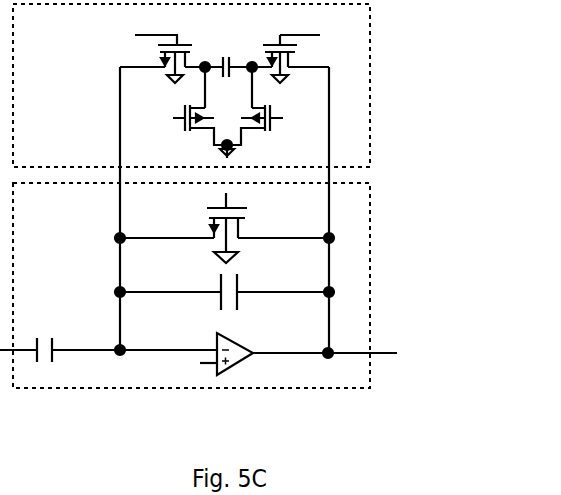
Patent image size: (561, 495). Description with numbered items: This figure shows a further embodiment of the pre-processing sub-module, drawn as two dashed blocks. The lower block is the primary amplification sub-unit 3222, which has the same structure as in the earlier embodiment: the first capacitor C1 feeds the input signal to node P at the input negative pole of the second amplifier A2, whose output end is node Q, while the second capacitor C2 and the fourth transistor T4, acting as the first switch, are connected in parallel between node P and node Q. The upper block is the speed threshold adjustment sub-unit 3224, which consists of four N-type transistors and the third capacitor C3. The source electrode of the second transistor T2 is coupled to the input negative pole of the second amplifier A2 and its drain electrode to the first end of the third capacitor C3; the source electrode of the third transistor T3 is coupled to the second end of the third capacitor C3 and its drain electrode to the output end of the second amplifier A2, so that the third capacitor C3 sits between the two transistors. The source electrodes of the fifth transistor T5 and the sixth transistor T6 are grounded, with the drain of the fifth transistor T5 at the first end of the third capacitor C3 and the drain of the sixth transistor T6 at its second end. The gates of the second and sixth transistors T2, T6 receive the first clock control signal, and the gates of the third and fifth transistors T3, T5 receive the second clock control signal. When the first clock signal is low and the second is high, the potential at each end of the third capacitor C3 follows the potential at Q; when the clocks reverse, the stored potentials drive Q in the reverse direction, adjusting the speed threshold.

The speed threshold adjustment sub-unit 3224 is at (239, 93).
The primary amplification sub-unit 3222 is at (232, 285).
The second transistor T2 is at (162, 52).
The third transistor T3 is at (291, 52).
The fourth transistor T4 is at (239, 228).
The fifth transistor T5 is at (179, 129).
The sixth transistor T6 is at (274, 129).
The first capacitor C1 is at (60, 339).
The second capacitor C2 is at (224, 292).
The third capacitor C3 is at (238, 56).
The second amplifier A2 is at (232, 354).
The node P is at (114, 342).
The node Q is at (335, 347).